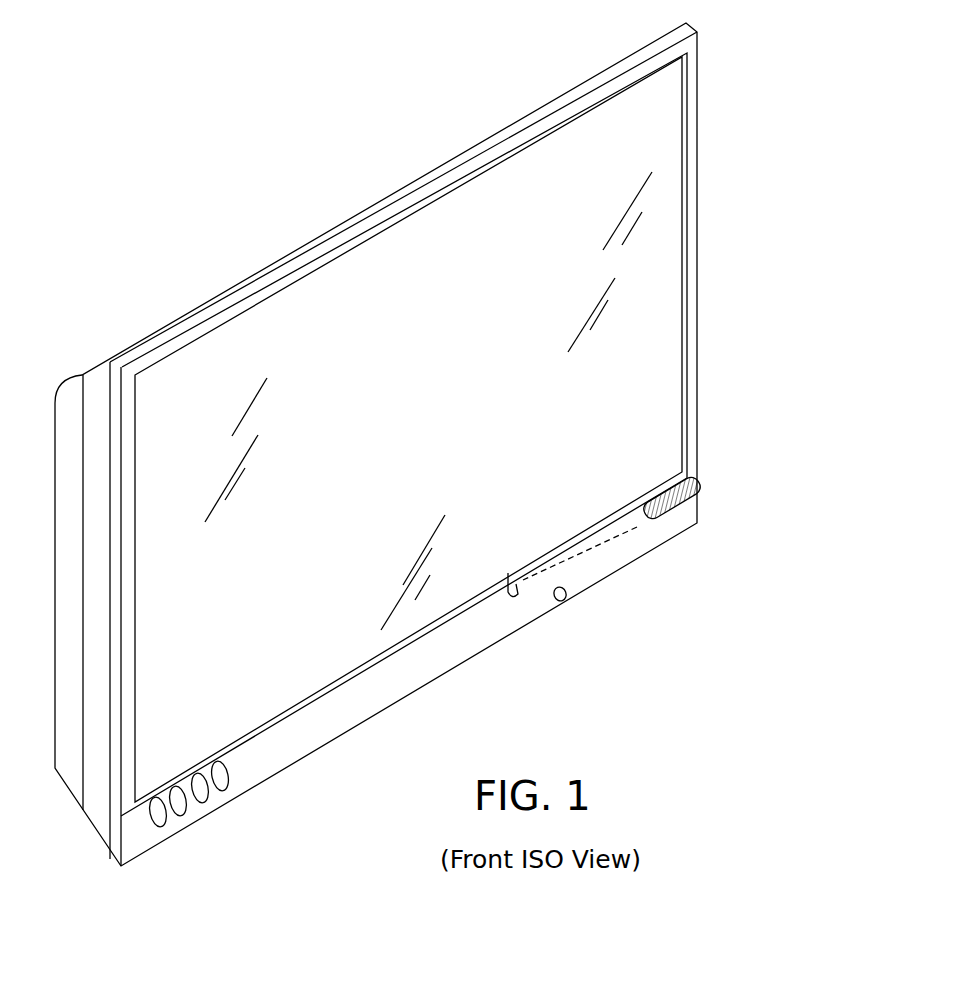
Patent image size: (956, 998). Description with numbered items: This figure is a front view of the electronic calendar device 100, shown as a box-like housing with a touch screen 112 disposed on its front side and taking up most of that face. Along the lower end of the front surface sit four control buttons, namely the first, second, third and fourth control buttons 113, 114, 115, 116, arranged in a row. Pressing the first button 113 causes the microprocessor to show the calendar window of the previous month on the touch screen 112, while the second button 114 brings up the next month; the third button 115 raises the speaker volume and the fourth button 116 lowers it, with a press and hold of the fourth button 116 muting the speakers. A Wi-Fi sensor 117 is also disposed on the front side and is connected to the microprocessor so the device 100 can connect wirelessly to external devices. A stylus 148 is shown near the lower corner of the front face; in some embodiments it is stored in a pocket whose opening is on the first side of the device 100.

The electronic calendar device 100 is at (675, 606).
The touch screen 112 is at (660, 258).
The first control button 113 is at (152, 826).
The second control button 114 is at (181, 816).
The third control button 115 is at (205, 802).
The fourth control button 116 is at (228, 777).
The Wi-Fi sensor 117 is at (563, 601).
The stylus 148 is at (703, 483).